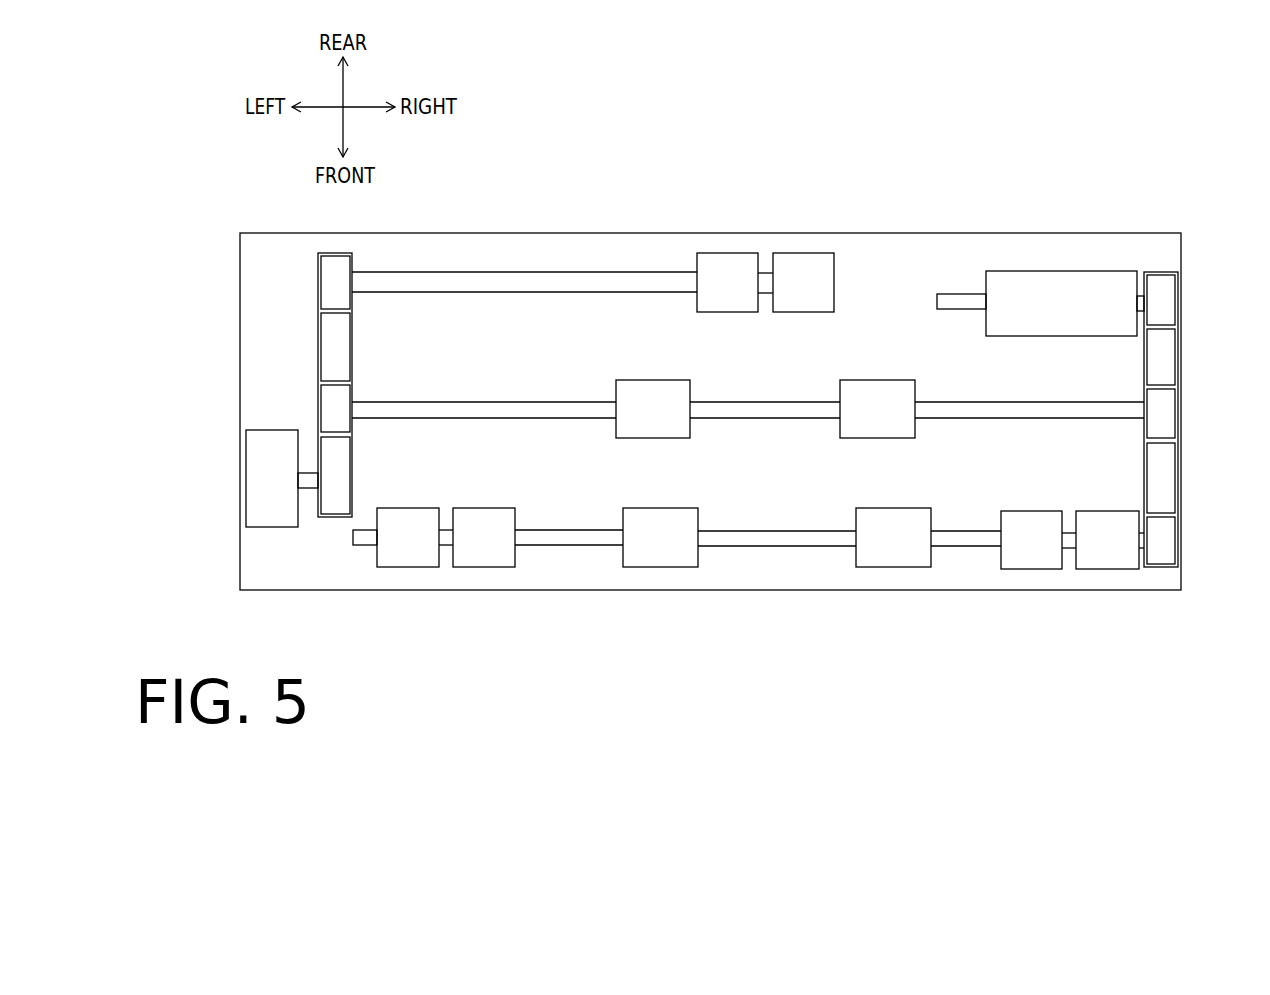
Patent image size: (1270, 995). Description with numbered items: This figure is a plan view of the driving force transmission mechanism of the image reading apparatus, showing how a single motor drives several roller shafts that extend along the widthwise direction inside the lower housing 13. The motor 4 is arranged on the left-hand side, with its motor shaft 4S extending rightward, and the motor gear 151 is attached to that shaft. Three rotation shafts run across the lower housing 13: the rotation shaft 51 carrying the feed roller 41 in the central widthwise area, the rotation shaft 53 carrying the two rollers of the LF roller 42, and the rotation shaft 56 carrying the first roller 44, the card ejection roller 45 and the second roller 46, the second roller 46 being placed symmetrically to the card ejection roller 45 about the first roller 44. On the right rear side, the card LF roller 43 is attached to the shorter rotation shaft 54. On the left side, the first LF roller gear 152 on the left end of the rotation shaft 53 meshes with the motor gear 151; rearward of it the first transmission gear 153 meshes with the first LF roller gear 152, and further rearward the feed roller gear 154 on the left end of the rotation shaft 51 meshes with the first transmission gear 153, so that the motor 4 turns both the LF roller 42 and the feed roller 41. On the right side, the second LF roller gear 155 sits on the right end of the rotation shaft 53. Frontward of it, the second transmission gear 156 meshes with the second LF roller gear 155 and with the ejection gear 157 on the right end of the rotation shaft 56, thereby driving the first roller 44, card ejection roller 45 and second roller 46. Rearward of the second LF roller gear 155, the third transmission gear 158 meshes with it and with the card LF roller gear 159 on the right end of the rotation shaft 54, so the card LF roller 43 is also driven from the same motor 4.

The motor 4 is at (258, 478).
The motor shaft 4S is at (308, 488).
The lower housing 13 is at (768, 717).
The feed roller 41 is at (727, 265).
The LF roller 42 is at (652, 398).
The card LF roller 43 is at (1062, 280).
The first roller 44 is at (661, 522).
The card ejection roller 45 is at (1030, 522).
The second roller 46 is at (413, 523).
The rotation shaft 51 is at (544, 280).
The rotation shaft 53 is at (530, 413).
The rotation shaft 54 is at (960, 298).
The rotation shaft 56 is at (800, 540).
The motor gear 151 is at (343, 450).
The first LF roller gear 152 is at (335, 408).
The first transmission gear 153 is at (335, 348).
The feed roller gear 154 is at (335, 288).
The second LF roller gear 155 is at (1160, 421).
The second transmission gear 156 is at (1160, 483).
The ejection gear 157 is at (1160, 543).
The third transmission gear 158 is at (1160, 362).
The card LF roller gear 159 is at (1160, 305).